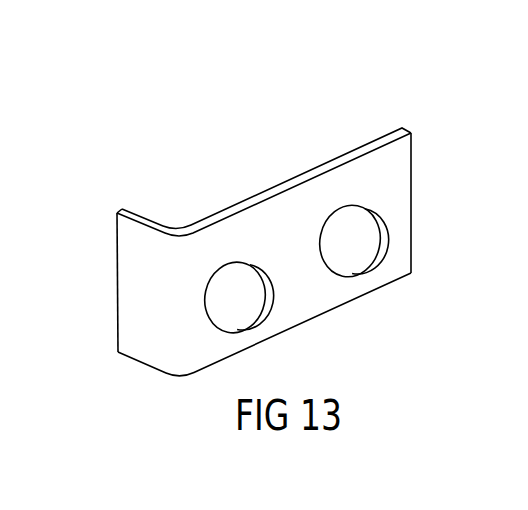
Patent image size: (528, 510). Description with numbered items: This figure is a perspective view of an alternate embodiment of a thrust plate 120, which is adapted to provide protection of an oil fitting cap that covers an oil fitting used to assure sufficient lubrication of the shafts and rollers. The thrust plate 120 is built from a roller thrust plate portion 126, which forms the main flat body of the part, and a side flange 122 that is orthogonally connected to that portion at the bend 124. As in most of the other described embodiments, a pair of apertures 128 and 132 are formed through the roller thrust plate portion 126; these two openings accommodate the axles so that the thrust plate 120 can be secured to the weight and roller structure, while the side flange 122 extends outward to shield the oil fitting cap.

The thrust plate 120 is at (254, 239).
The side flange 122 is at (138, 353).
The connection 124 is at (192, 378).
The roller thrust plate portion 126 is at (287, 202).
The aperture 128 is at (231, 327).
The aperture 132 is at (352, 267).